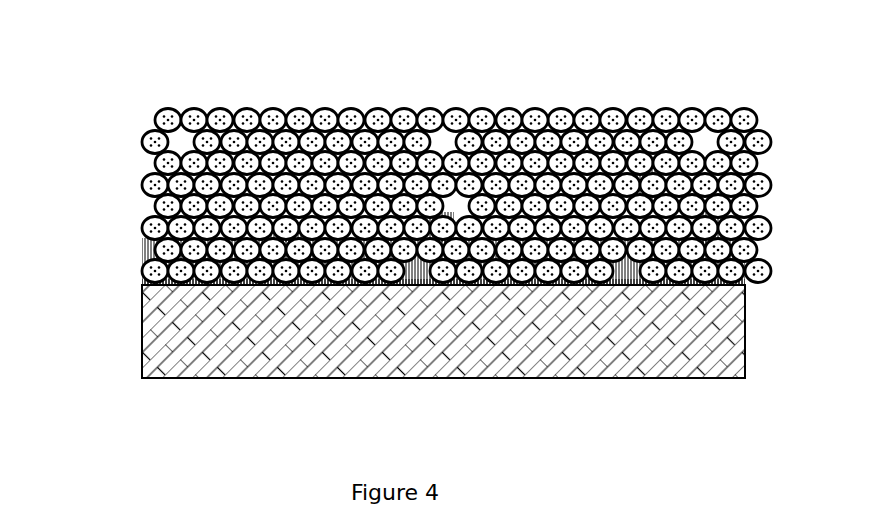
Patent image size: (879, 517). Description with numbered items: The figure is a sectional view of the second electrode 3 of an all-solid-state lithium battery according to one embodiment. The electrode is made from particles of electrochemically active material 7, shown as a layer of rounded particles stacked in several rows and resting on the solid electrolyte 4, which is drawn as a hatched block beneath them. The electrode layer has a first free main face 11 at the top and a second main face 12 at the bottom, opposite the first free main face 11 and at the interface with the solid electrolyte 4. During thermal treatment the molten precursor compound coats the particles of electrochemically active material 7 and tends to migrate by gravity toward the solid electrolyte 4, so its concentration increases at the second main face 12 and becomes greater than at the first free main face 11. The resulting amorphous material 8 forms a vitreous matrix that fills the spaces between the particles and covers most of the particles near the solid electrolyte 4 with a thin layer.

The second electrode 3 is at (401, 151).
The solid electrolyte 4 is at (680, 355).
The electrochemically active material 7 is at (540, 118).
The amorphous material 8 is at (272, 273).
The first free main face 11 is at (340, 113).
The second main face 12 is at (556, 282).